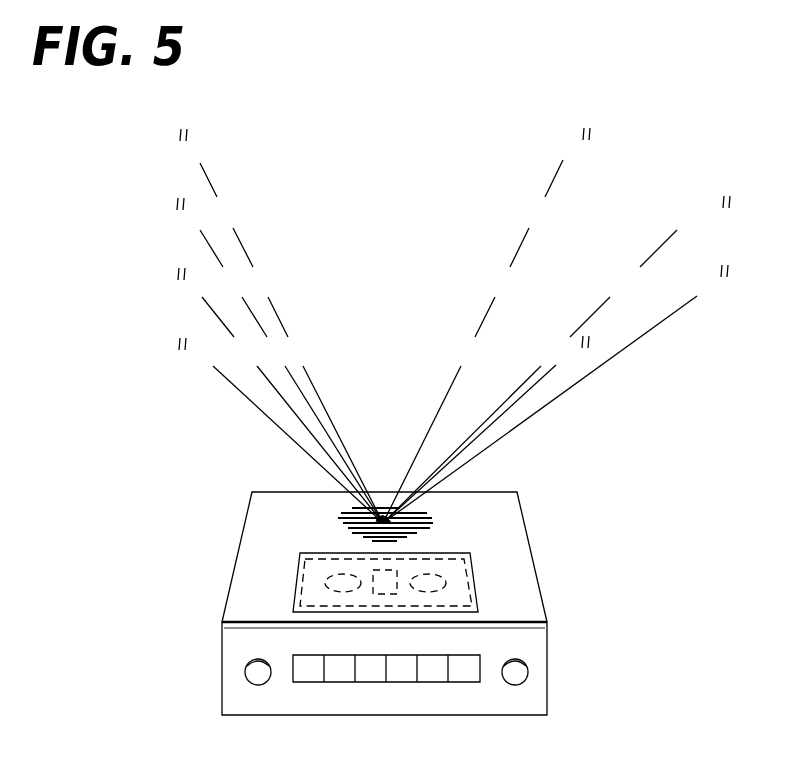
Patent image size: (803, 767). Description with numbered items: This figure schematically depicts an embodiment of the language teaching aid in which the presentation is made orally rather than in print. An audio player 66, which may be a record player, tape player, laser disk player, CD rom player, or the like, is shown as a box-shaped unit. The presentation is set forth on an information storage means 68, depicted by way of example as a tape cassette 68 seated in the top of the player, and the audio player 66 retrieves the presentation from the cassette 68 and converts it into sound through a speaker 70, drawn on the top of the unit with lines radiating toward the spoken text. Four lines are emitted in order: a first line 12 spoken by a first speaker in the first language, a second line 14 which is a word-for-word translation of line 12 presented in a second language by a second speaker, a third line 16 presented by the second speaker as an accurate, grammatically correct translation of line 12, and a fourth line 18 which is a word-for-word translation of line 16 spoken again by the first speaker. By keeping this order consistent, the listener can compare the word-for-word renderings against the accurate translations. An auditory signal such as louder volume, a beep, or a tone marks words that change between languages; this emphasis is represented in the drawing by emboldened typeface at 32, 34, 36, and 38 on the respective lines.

The first line 12 is at (538, 126).
The second line 14 is at (667, 196).
The third line 16 is at (703, 267).
The fourth line 18 is at (568, 365).
The emphasized word 32 is at (202, 124).
The emphasized word 34 is at (196, 196).
The emphasized word 36 is at (200, 265).
The emphasized word 38 is at (198, 335).
The audio player 66 is at (548, 613).
The information storage means 68 is at (302, 561).
The speaker 70 is at (353, 515).